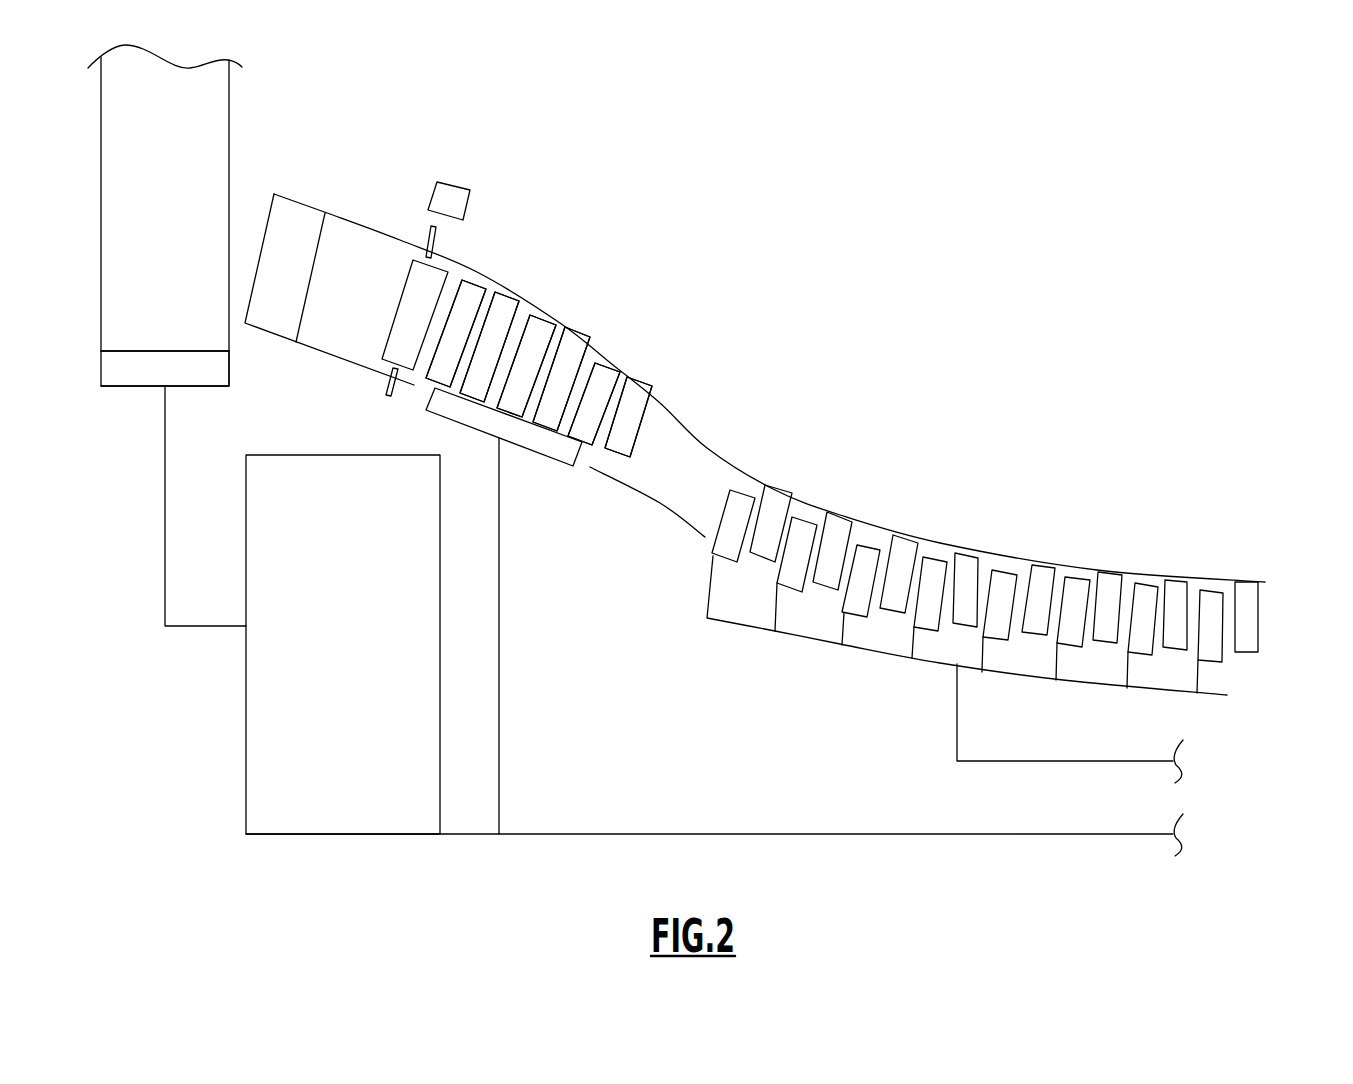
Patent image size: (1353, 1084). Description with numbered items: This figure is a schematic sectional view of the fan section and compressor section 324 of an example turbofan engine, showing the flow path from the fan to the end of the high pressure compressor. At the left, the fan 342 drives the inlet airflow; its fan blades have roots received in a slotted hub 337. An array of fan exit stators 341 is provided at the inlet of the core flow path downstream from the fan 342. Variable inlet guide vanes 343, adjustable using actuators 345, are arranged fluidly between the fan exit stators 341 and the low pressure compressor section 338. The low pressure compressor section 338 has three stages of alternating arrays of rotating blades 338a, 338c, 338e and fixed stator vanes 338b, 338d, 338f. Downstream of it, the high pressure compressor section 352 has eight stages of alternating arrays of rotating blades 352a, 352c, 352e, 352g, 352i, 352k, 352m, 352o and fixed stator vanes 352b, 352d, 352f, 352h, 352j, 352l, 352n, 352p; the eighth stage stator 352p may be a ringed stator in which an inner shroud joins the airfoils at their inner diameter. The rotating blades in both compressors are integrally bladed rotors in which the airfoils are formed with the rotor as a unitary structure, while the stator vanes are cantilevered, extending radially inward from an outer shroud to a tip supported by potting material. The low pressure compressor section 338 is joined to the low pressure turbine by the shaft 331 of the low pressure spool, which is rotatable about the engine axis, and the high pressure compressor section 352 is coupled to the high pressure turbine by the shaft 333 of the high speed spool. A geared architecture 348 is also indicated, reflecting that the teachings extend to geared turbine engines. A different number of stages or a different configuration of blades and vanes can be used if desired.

The compressor section 324 is at (775, 234).
The shaft 331 is at (618, 835).
The shaft 333 is at (1028, 762).
The slotted hub 337 is at (133, 372).
The low pressure compressor section 338 is at (536, 264).
The rotating blades 338a is at (474, 289).
The fixed stator vanes 338b is at (510, 303).
The rotating blades 338c is at (543, 331).
The fixed stator vanes 338d is at (576, 348).
The rotating blades 338e is at (603, 381).
The fixed stator vanes 338f is at (641, 388).
The fan exit stator 341 is at (298, 222).
The fan 342 is at (190, 200).
The variable inlet guide vanes 343 is at (413, 303).
The actuators 345 is at (449, 195).
The geared architecture 348 is at (367, 648).
The high pressure compressor section 352 is at (1056, 366).
The rotating blades 352a is at (742, 497).
The fixed stator vanes 352b is at (773, 500).
The rotating blades 352c is at (807, 523).
The fixed stator vanes 352d is at (837, 527).
The rotating blades 352e is at (870, 553).
The fixed stator vanes 352f is at (902, 549).
The rotating blades 352g is at (935, 563).
The fixed stator vanes 352h is at (967, 560).
The rotating blades 352i is at (1003, 578).
The fixed stator vanes 352j is at (1040, 575).
The rotating blades 352k is at (1078, 583).
The fixed stator vanes 352l is at (1112, 583).
The rotating blades 352m is at (1148, 587).
The fixed stator vanes 352n is at (1178, 586).
The rotating blades 352o is at (1215, 599).
The fixed stator vanes 352p is at (1245, 653).